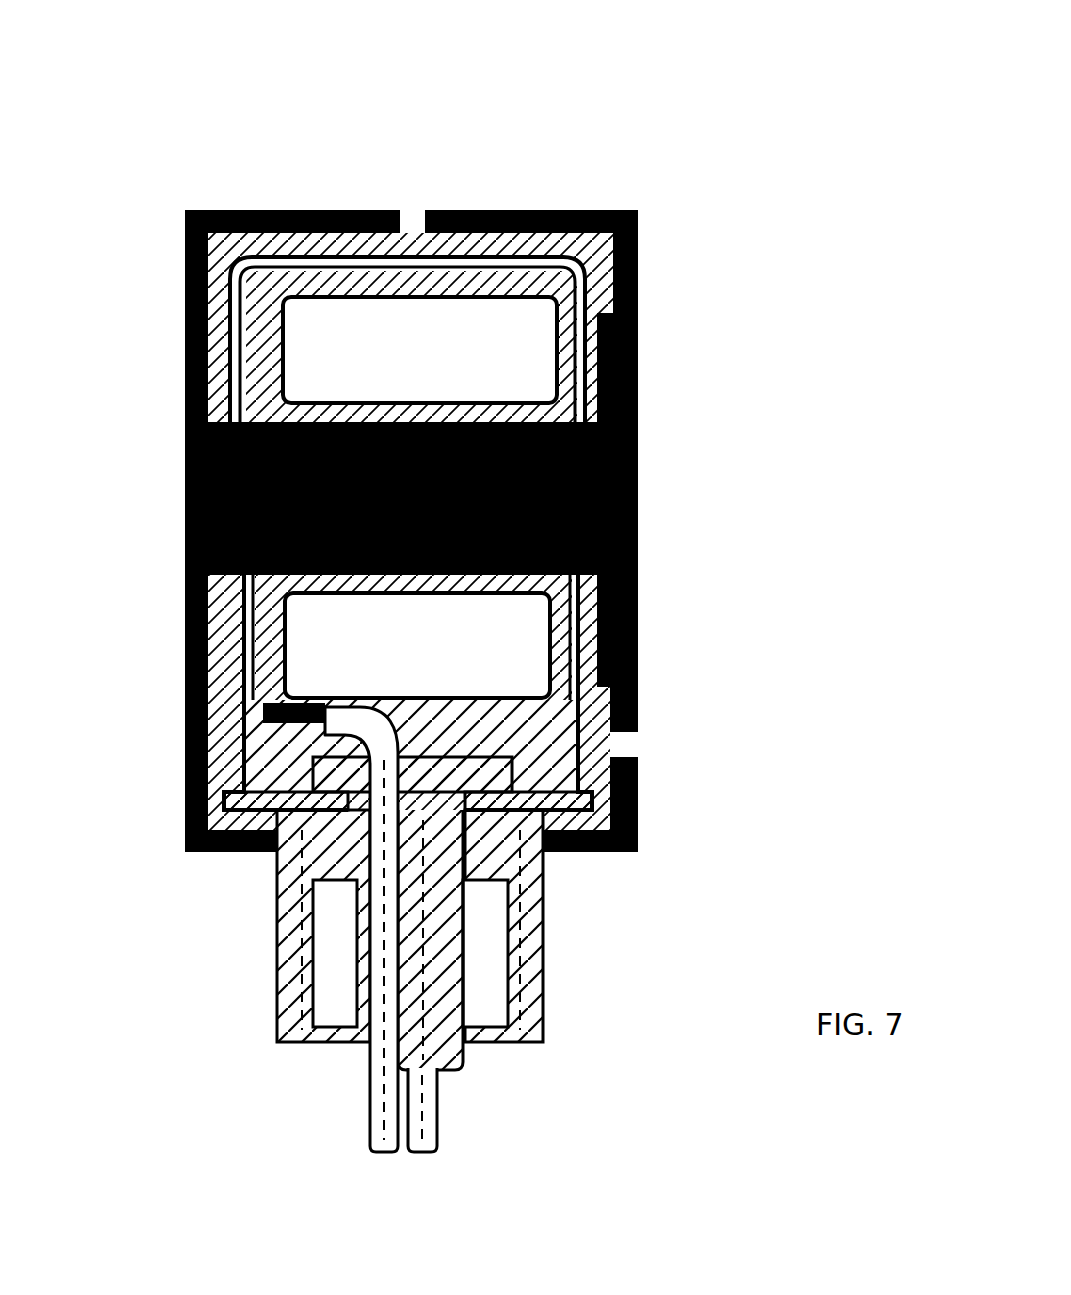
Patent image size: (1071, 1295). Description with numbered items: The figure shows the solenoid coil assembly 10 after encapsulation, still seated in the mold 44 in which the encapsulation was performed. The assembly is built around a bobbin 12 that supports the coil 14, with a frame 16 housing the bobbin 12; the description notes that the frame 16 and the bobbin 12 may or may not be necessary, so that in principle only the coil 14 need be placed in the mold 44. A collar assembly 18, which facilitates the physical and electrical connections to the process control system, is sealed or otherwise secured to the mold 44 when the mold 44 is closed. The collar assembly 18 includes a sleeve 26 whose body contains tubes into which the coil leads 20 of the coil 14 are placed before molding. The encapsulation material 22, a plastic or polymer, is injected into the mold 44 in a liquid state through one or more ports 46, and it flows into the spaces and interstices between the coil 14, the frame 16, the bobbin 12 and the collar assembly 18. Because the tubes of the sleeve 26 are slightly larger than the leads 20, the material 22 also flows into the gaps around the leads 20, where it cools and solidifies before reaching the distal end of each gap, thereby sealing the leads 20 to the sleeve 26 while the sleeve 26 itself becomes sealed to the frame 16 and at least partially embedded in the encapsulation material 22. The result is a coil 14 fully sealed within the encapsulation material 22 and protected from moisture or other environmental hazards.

The solenoid coil assembly 10 is at (750, 118).
The bobbin 12 is at (268, 318).
The coil 14 is at (468, 320).
The frame 16 is at (592, 315).
The collar assembly 18 is at (297, 973).
The coil leads 20 is at (335, 722).
The encapsulation material 22 is at (190, 210).
The sleeve 26 is at (453, 1053).
The mold 44 is at (186, 482).
The ports 46 is at (412, 222).